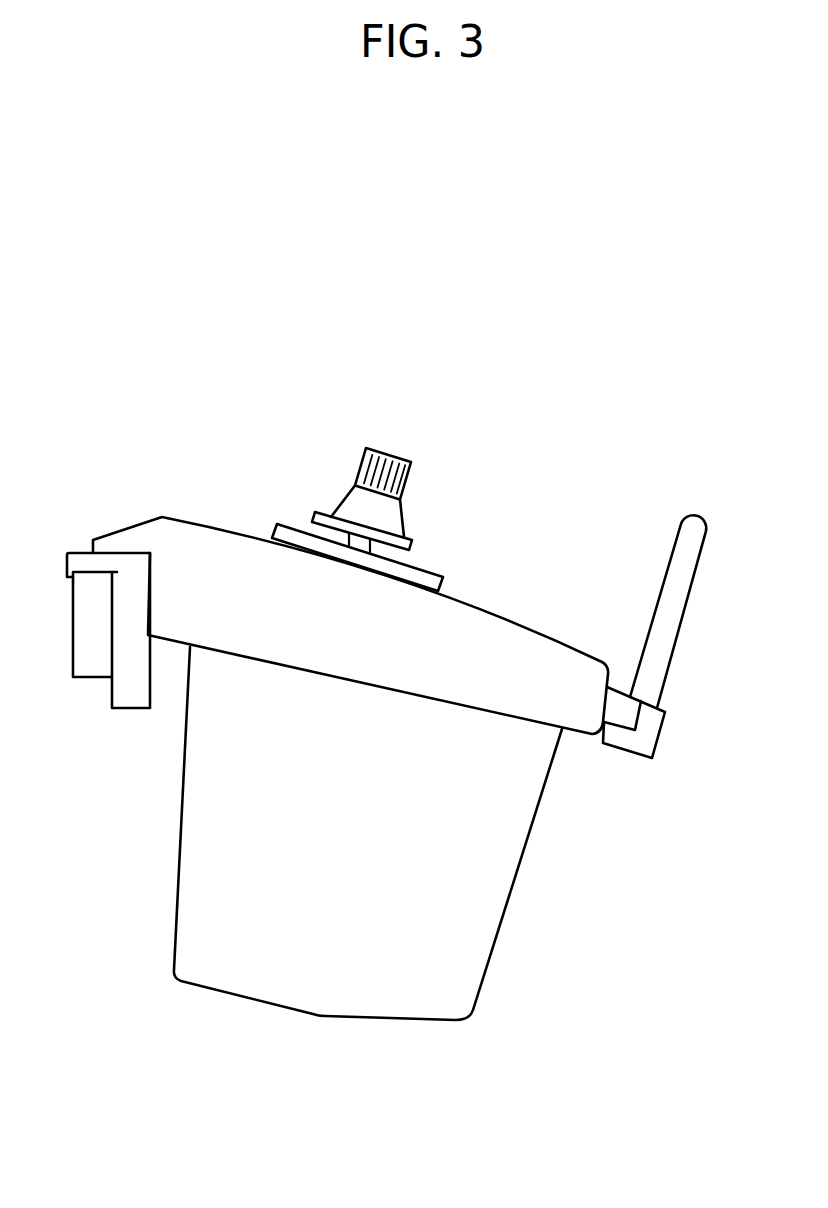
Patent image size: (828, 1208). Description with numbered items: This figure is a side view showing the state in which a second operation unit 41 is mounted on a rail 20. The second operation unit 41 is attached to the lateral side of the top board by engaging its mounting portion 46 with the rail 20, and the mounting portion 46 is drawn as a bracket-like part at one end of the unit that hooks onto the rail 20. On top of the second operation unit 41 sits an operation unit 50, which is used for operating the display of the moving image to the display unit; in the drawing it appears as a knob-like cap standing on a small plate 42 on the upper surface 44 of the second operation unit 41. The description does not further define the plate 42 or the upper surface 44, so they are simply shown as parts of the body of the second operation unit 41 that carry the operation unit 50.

The rail 20 is at (95, 663).
The second operation unit 41 is at (535, 247).
The mounting plate 42 is at (382, 517).
The lid 44 is at (475, 643).
The mounting portion 46 is at (82, 560).
The operation unit 50 is at (397, 432).